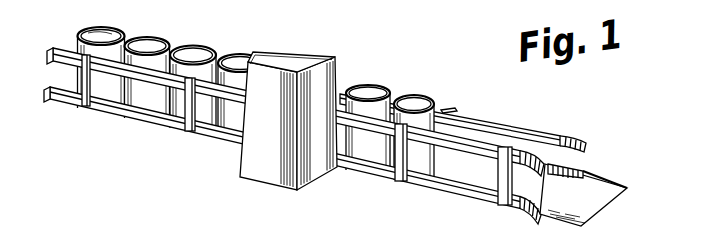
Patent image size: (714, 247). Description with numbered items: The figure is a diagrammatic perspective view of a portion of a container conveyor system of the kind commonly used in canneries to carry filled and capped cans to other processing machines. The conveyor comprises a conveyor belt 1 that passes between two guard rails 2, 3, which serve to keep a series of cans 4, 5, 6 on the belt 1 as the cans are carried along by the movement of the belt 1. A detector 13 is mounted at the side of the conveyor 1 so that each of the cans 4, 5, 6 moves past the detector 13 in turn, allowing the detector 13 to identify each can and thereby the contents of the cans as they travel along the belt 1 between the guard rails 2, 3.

The conveyor belt 1 is at (583, 172).
The guard rail 2 is at (470, 193).
The guard rail 3 is at (478, 123).
The can 4 is at (435, 103).
The can 5 is at (397, 92).
The can 6 is at (353, 85).
The detector 13 is at (283, 48).